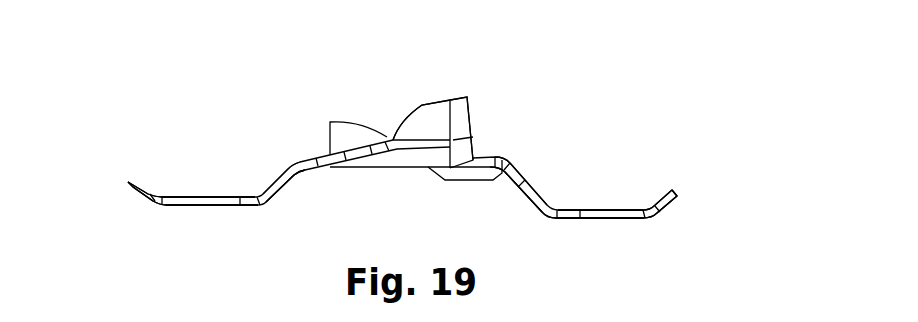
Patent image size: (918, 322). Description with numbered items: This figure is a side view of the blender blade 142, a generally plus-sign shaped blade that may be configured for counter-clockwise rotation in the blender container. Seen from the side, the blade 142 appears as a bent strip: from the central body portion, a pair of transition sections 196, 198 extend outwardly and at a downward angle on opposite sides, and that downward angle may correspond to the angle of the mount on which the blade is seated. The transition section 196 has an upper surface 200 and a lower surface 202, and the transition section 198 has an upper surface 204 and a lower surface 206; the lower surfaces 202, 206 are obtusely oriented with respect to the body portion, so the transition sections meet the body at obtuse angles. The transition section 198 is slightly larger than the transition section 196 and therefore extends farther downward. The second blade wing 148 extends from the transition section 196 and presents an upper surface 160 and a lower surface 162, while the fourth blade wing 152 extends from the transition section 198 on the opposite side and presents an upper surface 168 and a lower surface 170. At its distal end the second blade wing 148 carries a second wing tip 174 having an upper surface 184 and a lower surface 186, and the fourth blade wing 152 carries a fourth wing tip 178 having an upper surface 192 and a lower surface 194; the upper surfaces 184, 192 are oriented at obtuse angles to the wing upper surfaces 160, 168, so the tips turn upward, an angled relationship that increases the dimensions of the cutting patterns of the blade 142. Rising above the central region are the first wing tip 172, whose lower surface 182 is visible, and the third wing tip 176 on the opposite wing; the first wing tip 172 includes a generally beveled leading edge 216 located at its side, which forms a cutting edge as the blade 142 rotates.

The blade 142 is at (545, 90).
The second blade wing 148 is at (225, 205).
The fourth blade wing 152 is at (593, 215).
The upper surface 160 is at (200, 195).
The lower surface 162 is at (173, 207).
The upper surface 168 is at (605, 208).
The lower surface 170 is at (623, 220).
The first wing tip 172 is at (440, 103).
The second wing tip 174 is at (127, 178).
The third wing tip 176 is at (348, 127).
The fourth wing tip 178 is at (676, 194).
The lower surface 182 is at (427, 133).
The upper surface 184 is at (143, 190).
The lower surface 186 is at (135, 192).
The upper surface 192 is at (660, 196).
The lower surface 194 is at (671, 208).
The transition section 196 is at (278, 167).
The transition section 198 is at (520, 170).
The upper surface 200 is at (287, 167).
The lower surface 202 is at (288, 177).
The upper surface 204 is at (535, 192).
The lower surface 206 is at (537, 188).
The leading edge 216 is at (462, 118).